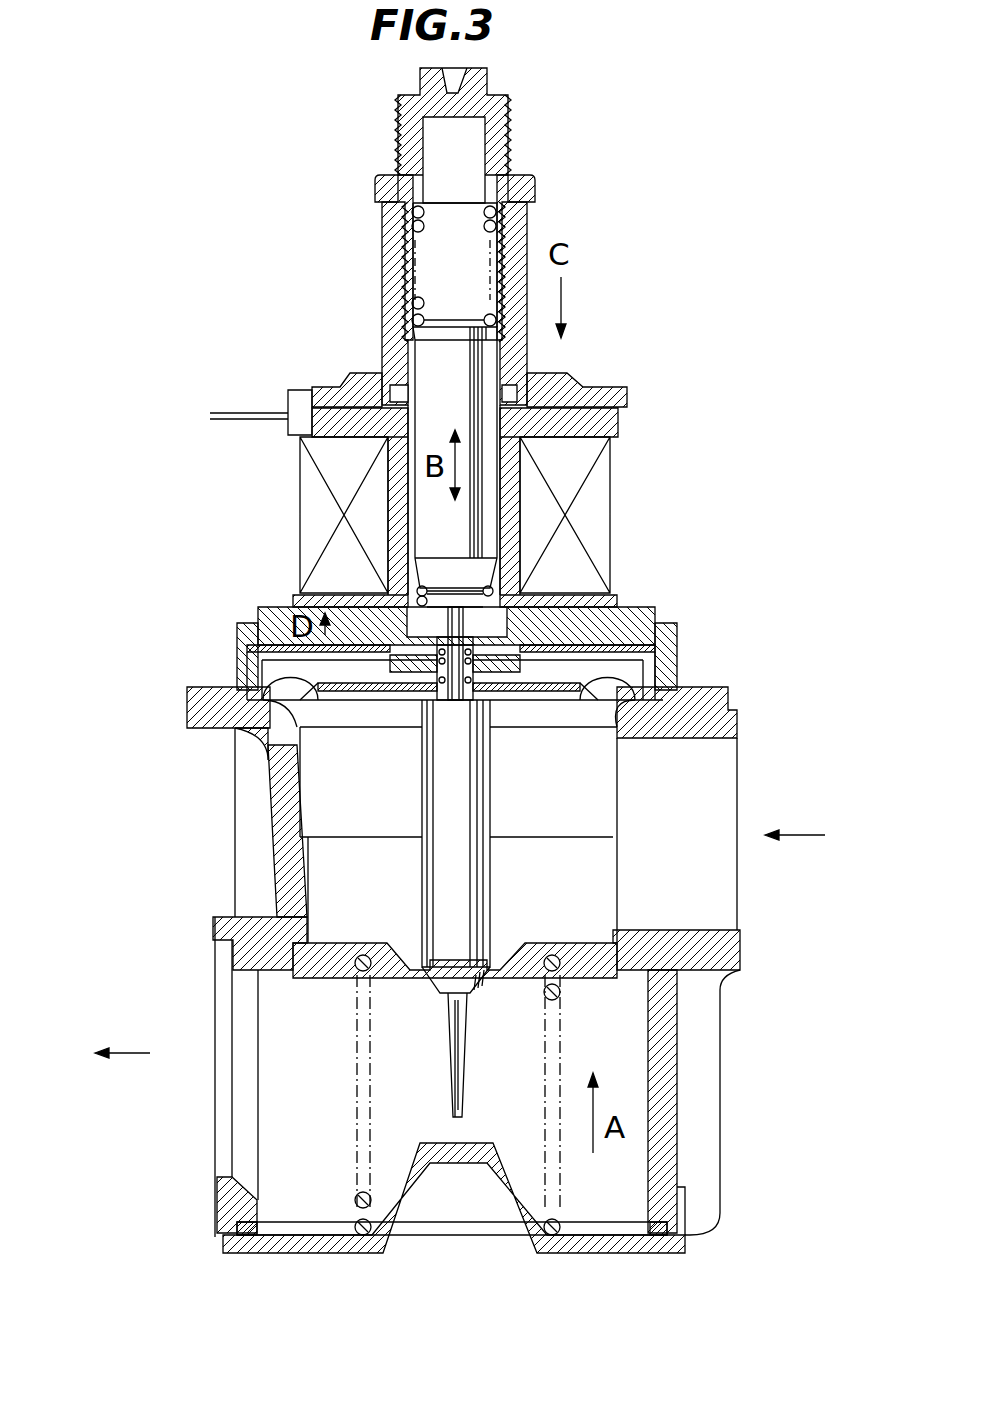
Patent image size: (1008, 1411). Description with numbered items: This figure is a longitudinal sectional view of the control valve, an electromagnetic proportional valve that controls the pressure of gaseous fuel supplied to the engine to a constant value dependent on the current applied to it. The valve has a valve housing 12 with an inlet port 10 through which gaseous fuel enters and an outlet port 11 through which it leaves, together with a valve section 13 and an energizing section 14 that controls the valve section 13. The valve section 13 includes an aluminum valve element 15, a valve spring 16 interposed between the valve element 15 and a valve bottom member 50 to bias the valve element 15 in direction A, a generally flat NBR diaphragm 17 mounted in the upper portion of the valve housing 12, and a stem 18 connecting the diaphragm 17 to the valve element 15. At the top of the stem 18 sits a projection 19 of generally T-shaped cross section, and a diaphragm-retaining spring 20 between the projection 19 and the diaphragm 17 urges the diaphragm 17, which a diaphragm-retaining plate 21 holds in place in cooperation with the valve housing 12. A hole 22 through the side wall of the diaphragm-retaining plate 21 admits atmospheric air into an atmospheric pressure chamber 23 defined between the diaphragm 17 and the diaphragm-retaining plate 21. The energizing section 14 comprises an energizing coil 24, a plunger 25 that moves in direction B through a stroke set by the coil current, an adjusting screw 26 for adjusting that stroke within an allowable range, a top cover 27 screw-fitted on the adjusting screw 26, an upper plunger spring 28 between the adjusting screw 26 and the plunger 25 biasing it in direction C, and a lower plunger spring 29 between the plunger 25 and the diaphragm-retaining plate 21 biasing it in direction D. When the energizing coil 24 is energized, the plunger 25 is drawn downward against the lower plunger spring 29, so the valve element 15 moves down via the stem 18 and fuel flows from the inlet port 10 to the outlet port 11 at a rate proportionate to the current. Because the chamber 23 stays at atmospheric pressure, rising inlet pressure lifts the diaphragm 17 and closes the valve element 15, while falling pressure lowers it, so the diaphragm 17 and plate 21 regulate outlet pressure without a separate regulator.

The inlet port 10 is at (647, 928).
The outlet port 11 is at (243, 1173).
The valve housing 12 is at (253, 932).
The valve section 13 is at (422, 892).
The energizing section 14 is at (638, 310).
The valve element 15 is at (333, 957).
The valve spring 16 is at (563, 990).
The diaphragm 17 is at (616, 645).
The stem 18 is at (455, 765).
The projection 19 is at (392, 598).
The diaphragm-retaining spring 20 is at (468, 620).
The diaphragm-retaining plate 21 is at (610, 627).
The hole 22 is at (272, 670).
The atmospheric pressure chamber 23 is at (608, 662).
The energizing coil 24 is at (317, 493).
The plunger 25 is at (435, 360).
The adjusting screw 26 is at (400, 135).
The top cover 27 is at (418, 236).
The upper plunger spring 28 is at (415, 300).
The lower plunger spring 29 is at (520, 588).
The valve bottom member 50 is at (610, 1255).